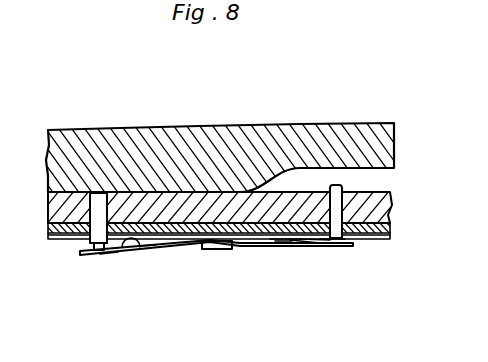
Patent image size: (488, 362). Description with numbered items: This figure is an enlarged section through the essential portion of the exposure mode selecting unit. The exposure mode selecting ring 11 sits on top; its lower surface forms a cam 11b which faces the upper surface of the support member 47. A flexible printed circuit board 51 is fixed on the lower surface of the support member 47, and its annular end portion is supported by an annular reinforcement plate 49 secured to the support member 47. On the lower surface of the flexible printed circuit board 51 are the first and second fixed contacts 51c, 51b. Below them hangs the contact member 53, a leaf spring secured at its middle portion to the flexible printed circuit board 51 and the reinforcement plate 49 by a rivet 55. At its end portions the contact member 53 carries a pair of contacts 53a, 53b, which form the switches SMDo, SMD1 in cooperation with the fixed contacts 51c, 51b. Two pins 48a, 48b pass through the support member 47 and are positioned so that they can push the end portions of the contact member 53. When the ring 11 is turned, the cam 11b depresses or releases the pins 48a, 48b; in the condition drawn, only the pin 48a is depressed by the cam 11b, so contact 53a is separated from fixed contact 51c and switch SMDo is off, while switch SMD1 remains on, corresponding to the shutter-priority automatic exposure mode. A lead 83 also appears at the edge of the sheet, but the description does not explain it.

The lead portion 83 is at (0, 12).
The exposure mode selecting ring 11 is at (382, 148).
The cam 11b is at (280, 178).
The support member 47 is at (378, 196).
The annular reinforcement plate 49 is at (390, 225).
The flexible printed circuit board 51 is at (375, 239).
The second fixed contact 51b is at (282, 243).
The first fixed contact 51c is at (147, 248).
The pin 48a is at (72, 241).
The pin 48b is at (333, 230).
The contact member 53 is at (165, 250).
The contact 53a is at (132, 248).
The contact 53b is at (308, 243).
The rivet 55 is at (213, 250).
The switch SMD0 SMDo is at (108, 257).
The switch SMD1 is at (333, 248).